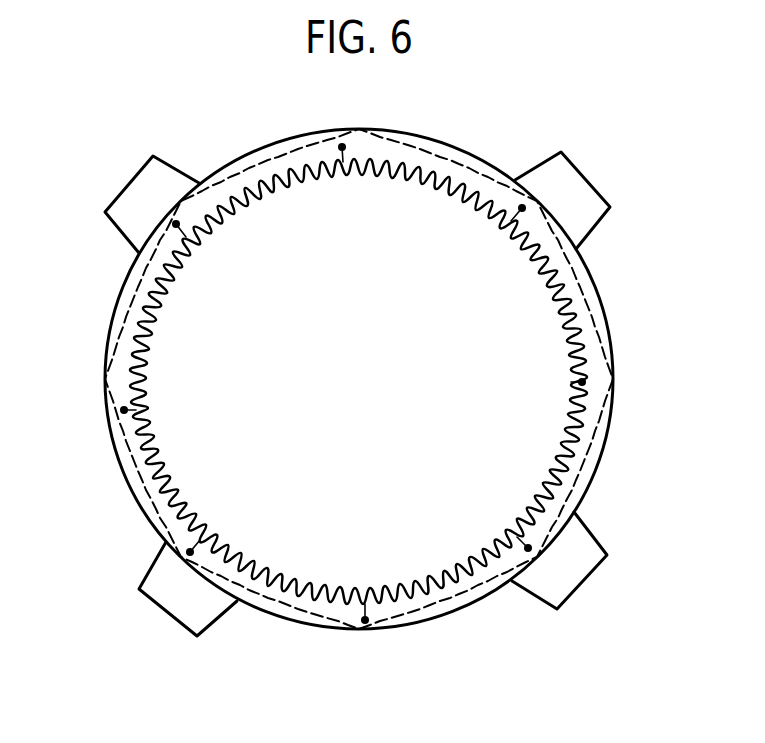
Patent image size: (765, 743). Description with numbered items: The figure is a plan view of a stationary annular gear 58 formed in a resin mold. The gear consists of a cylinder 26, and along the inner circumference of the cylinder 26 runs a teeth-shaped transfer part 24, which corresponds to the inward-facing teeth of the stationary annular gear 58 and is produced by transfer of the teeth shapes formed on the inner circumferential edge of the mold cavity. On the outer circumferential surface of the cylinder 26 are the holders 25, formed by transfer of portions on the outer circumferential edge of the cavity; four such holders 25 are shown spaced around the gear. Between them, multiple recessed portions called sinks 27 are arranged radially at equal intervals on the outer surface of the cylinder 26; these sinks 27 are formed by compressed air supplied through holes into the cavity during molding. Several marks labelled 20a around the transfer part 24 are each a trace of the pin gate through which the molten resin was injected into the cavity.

The stationary annular gear 58 is at (512, 92).
The cylinder 26 is at (138, 271).
The holders 25 is at (134, 182).
The sinks 27 is at (72, 322).
The teeth-shaped transfer part 24 is at (252, 201).
The trace of the pin gate 20a is at (342, 151).